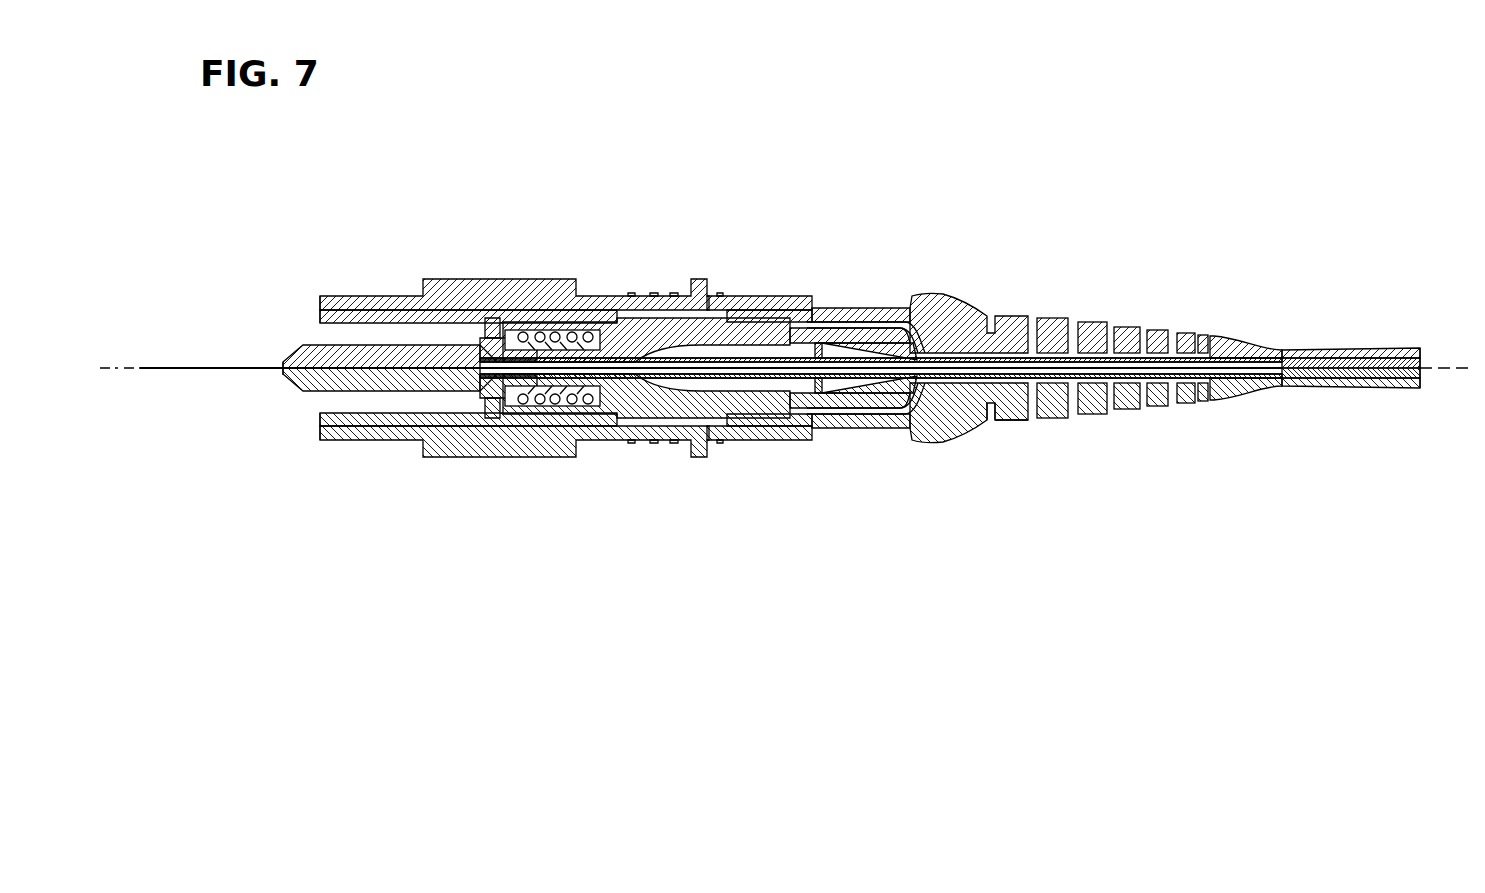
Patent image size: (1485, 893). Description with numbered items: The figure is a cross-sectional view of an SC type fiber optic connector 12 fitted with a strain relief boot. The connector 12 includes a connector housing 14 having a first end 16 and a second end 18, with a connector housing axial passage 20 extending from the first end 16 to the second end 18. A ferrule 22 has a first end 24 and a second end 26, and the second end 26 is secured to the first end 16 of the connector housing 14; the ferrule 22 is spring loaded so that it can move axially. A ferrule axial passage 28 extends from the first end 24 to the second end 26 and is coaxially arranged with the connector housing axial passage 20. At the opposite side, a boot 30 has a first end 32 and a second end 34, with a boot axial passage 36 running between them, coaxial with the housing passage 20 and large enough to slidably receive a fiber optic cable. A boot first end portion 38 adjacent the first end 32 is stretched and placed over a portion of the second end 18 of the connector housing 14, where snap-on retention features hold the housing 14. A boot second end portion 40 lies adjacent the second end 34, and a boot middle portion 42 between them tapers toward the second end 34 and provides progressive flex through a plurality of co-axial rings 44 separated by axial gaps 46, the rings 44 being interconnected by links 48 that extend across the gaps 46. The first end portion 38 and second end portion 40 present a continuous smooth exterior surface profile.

The fiber optic connector 12 is at (620, 253).
The connector housing 14 is at (640, 428).
The first end 16 is at (316, 441).
The second end 18 is at (813, 447).
The connector housing axial passage 20 is at (745, 395).
The ferrule 22 is at (368, 342).
The first end 24 is at (283, 366).
The second end 26 is at (497, 392).
The ferrule axial passage 28 is at (292, 374).
The boot 30 is at (1062, 308).
The first end 32 is at (727, 305).
The second end 34 is at (1422, 390).
The boot axial passage 36 is at (1421, 348).
The boot first end portion 38 is at (893, 307).
The boot second end portion 40 is at (1282, 394).
The boot middle portion 42 is at (1096, 420).
The co-axial rings 44 is at (1013, 423).
The axial gaps 46 is at (1035, 430).
The links 48 is at (991, 406).